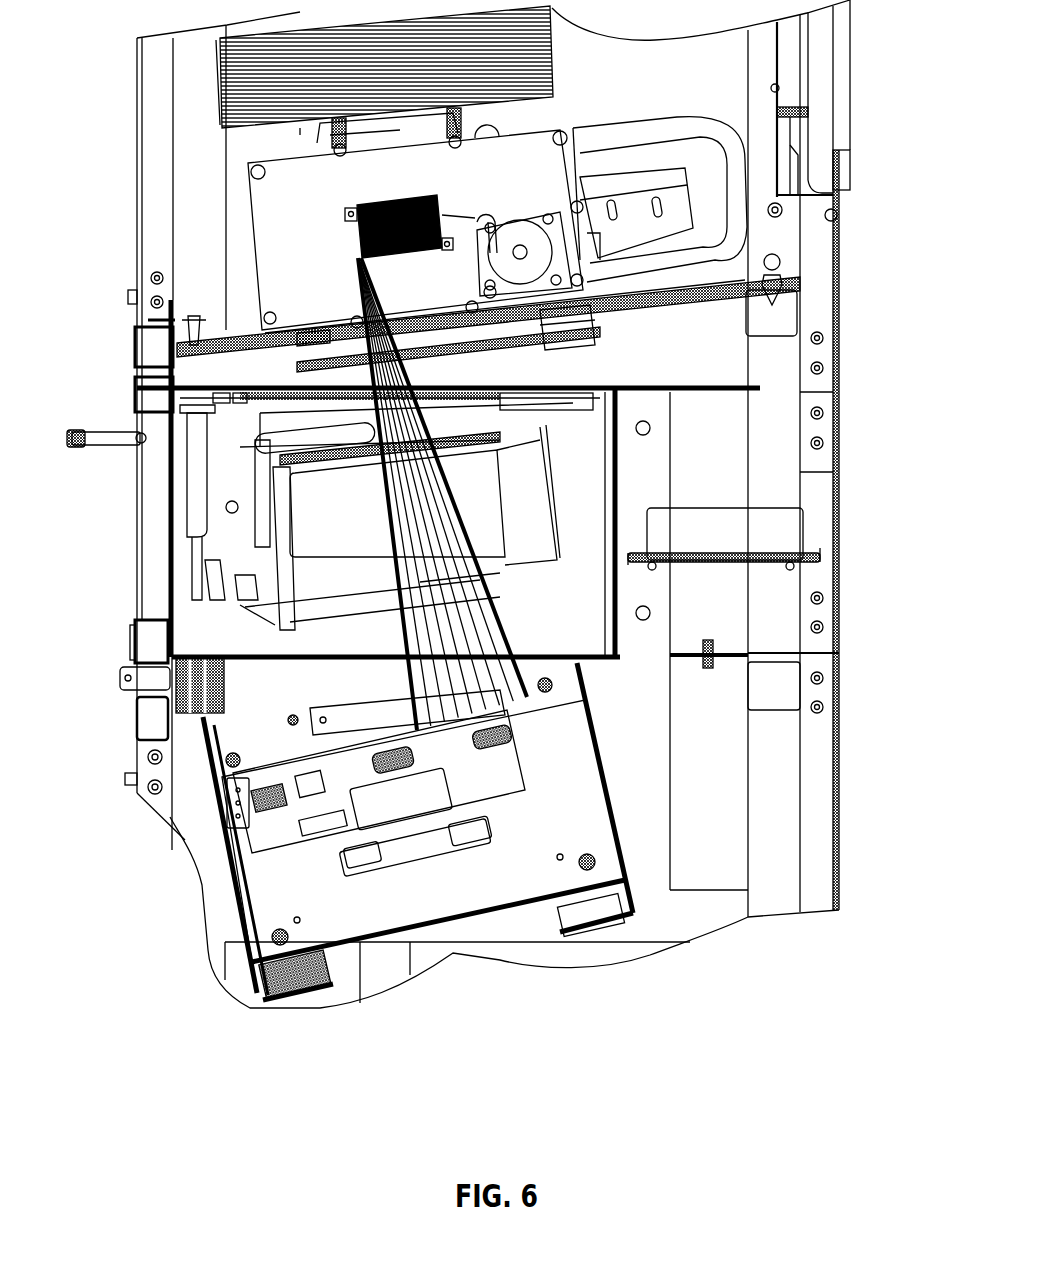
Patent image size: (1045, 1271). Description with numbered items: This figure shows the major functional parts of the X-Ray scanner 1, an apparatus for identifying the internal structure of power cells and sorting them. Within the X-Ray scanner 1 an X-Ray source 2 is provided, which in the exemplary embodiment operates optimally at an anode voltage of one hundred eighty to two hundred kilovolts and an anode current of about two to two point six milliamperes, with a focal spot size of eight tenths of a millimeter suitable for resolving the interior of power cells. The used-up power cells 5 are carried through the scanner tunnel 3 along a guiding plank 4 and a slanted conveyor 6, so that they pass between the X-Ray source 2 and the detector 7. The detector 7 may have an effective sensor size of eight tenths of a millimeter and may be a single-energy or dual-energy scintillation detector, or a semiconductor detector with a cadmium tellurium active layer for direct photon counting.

The X-Ray scanner 1 is at (840, 630).
The X-Ray source 2 is at (290, 237).
The scanner tunnel 3 is at (620, 486).
The guiding plank 4 is at (355, 438).
The used-up power cells 5 is at (470, 400).
The slanted conveyor 6 is at (560, 418).
The detector 7 is at (500, 717).